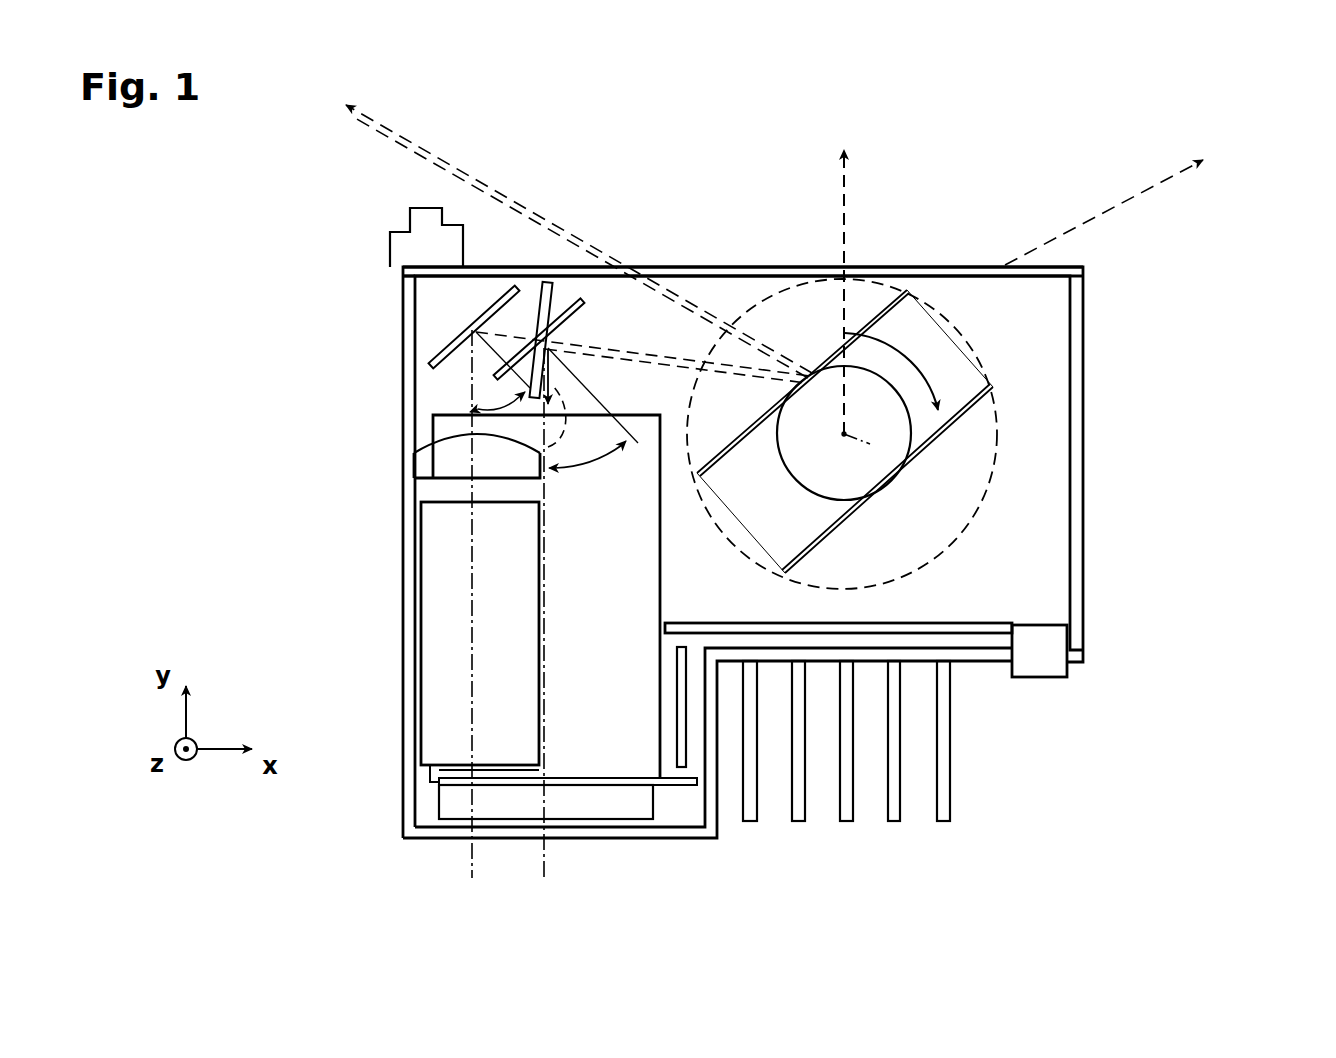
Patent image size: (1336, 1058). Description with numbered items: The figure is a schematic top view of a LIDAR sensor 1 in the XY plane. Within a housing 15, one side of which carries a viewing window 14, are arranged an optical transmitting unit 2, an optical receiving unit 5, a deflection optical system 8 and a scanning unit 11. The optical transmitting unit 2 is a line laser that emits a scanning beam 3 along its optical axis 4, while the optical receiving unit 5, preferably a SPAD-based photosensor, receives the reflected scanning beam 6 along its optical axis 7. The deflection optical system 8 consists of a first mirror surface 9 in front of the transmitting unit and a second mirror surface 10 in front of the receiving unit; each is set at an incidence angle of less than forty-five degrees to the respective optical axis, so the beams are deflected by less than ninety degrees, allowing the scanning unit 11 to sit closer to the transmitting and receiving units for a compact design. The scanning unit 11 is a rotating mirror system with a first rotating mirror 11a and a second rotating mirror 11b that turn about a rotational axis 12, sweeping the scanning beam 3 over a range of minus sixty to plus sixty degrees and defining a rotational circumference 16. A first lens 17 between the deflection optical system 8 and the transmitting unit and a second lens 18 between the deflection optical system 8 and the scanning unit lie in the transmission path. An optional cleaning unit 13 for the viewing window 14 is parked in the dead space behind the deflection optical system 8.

The LIDAR sensor 1 is at (1262, 160).
The optical transmitting unit 2 is at (420, 735).
The scanning beam 3 is at (372, 120).
The optical axis of optical transmitting unit 4 is at (476, 332).
The optical receiving unit 5 is at (660, 578).
The reflected scanning beam 6 is at (413, 152).
The optical axis of optical receiving unit 7 is at (543, 857).
The deflection optical system 8 is at (376, 362).
The first mirror surface 9 is at (456, 362).
The second mirror surface 10 is at (581, 303).
The scanning unit 11 is at (990, 524).
The first rotating mirror 11a is at (897, 290).
The second rotating mirror 11b is at (938, 432).
The rotational axis 12 is at (870, 444).
The cleaning unit 13 is at (402, 248).
The viewing window 14 is at (752, 270).
The housing 15 is at (1089, 578).
The rotational circumference 16 is at (990, 492).
The first lens 17 is at (445, 473).
The second lens 18 is at (547, 284).